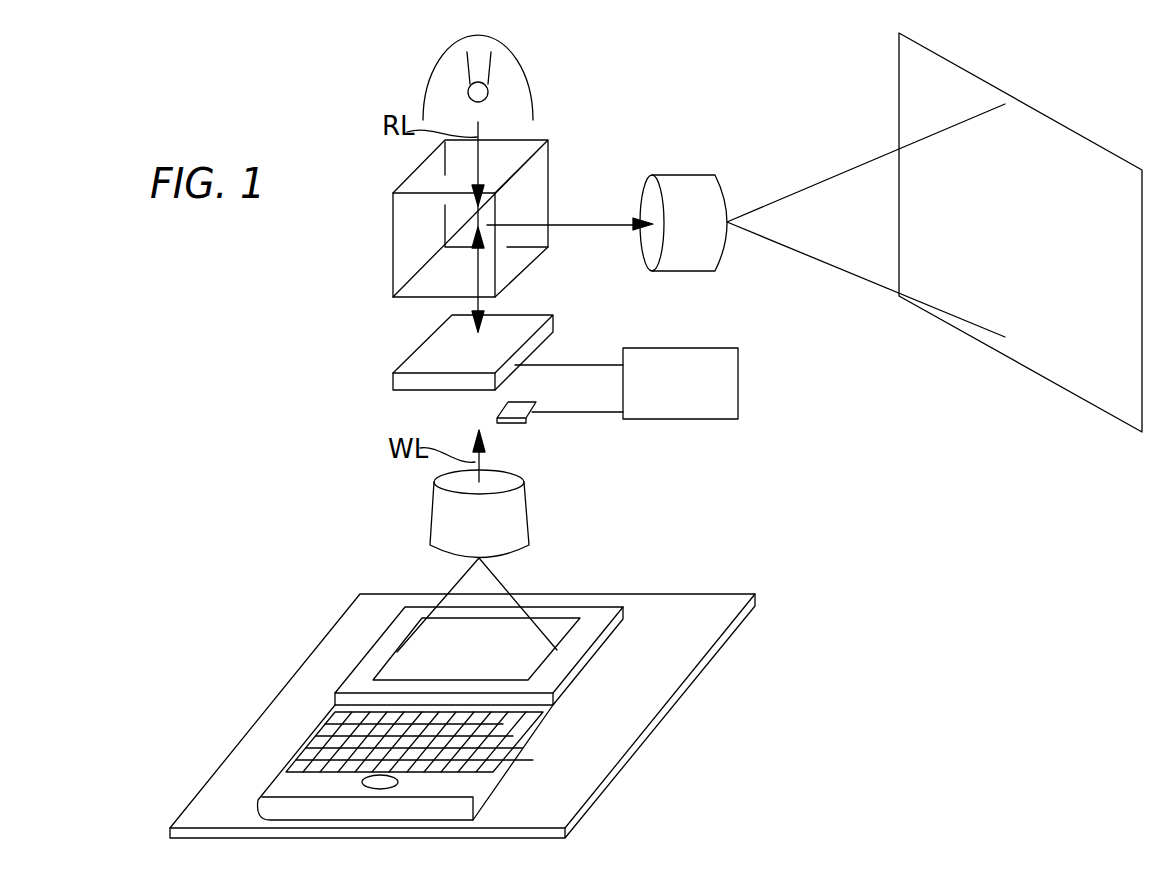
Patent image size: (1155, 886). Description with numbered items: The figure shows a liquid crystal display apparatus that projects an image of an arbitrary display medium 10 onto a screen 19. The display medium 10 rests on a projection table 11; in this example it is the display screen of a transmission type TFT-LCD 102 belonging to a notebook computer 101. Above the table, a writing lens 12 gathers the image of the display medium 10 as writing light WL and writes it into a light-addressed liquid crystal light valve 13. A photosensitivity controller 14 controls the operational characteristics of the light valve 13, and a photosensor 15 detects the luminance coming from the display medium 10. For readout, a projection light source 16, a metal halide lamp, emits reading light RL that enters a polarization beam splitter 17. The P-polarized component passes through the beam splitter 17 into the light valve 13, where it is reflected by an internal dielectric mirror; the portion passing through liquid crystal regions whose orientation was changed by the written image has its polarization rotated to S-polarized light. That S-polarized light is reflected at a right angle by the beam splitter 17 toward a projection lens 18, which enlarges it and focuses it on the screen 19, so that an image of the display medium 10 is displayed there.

The display medium 10 is at (483, 713).
The projection table 11 is at (640, 742).
The writing lens 12 is at (435, 502).
The light-addressed liquid crystal light valve 13 is at (408, 358).
The photosensitivity controller 14 is at (738, 388).
The photosensor 15 is at (527, 422).
The projection light source 16 is at (513, 88).
The polarization beam splitter 17 is at (413, 172).
The projection lens 18 is at (697, 172).
The screen 19 is at (1057, 120).
The notebook computer 101 is at (305, 743).
The transmission type TFT-LCD 102 is at (400, 665).